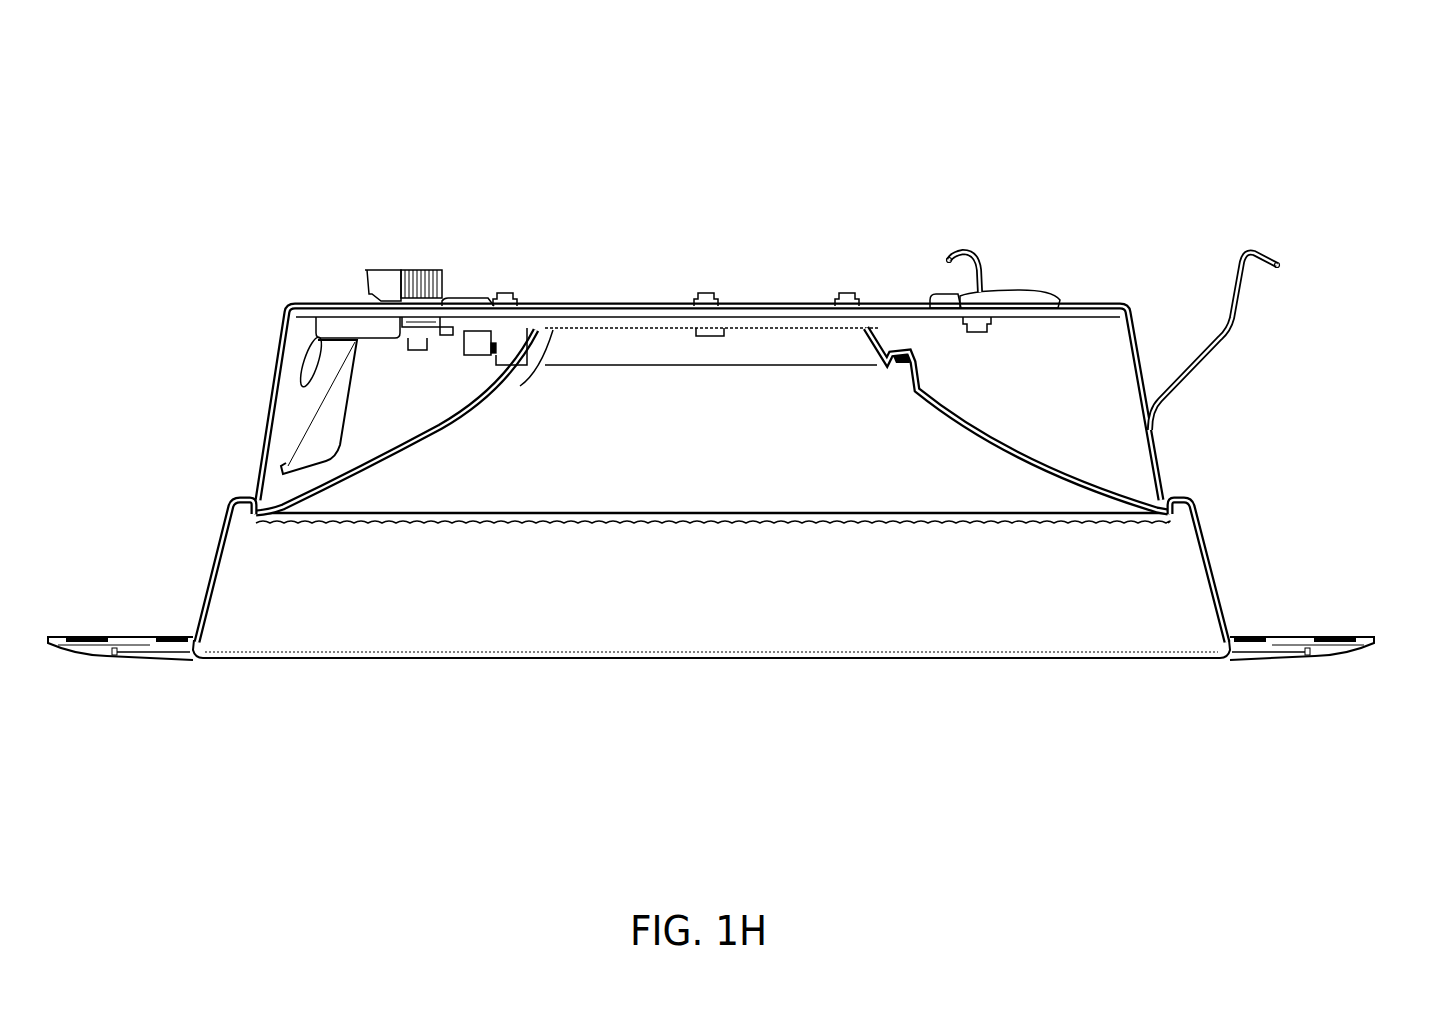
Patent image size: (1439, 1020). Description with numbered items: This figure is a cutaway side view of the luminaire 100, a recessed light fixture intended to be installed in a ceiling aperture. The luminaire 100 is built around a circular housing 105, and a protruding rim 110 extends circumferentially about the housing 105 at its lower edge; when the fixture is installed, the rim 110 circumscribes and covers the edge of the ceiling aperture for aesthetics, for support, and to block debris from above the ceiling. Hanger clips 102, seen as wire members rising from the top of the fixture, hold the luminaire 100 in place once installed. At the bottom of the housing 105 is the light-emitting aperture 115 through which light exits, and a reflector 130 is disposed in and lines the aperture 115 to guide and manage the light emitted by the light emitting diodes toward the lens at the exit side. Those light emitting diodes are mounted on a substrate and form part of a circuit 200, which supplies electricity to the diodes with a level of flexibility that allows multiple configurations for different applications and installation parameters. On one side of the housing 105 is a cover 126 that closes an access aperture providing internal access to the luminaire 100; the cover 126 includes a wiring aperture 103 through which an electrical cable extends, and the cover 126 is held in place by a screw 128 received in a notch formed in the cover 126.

The luminaire 100 is at (1276, 96).
The hanger clips 102 is at (977, 257).
The wiring aperture 103 is at (306, 358).
The housing 105 is at (1152, 440).
The rim 110 is at (1330, 605).
The light-emitting aperture 115 is at (709, 695).
The cover 126 is at (292, 420).
The screw 128 is at (428, 245).
The reflector 130 is at (866, 430).
The circuit 200 is at (481, 318).